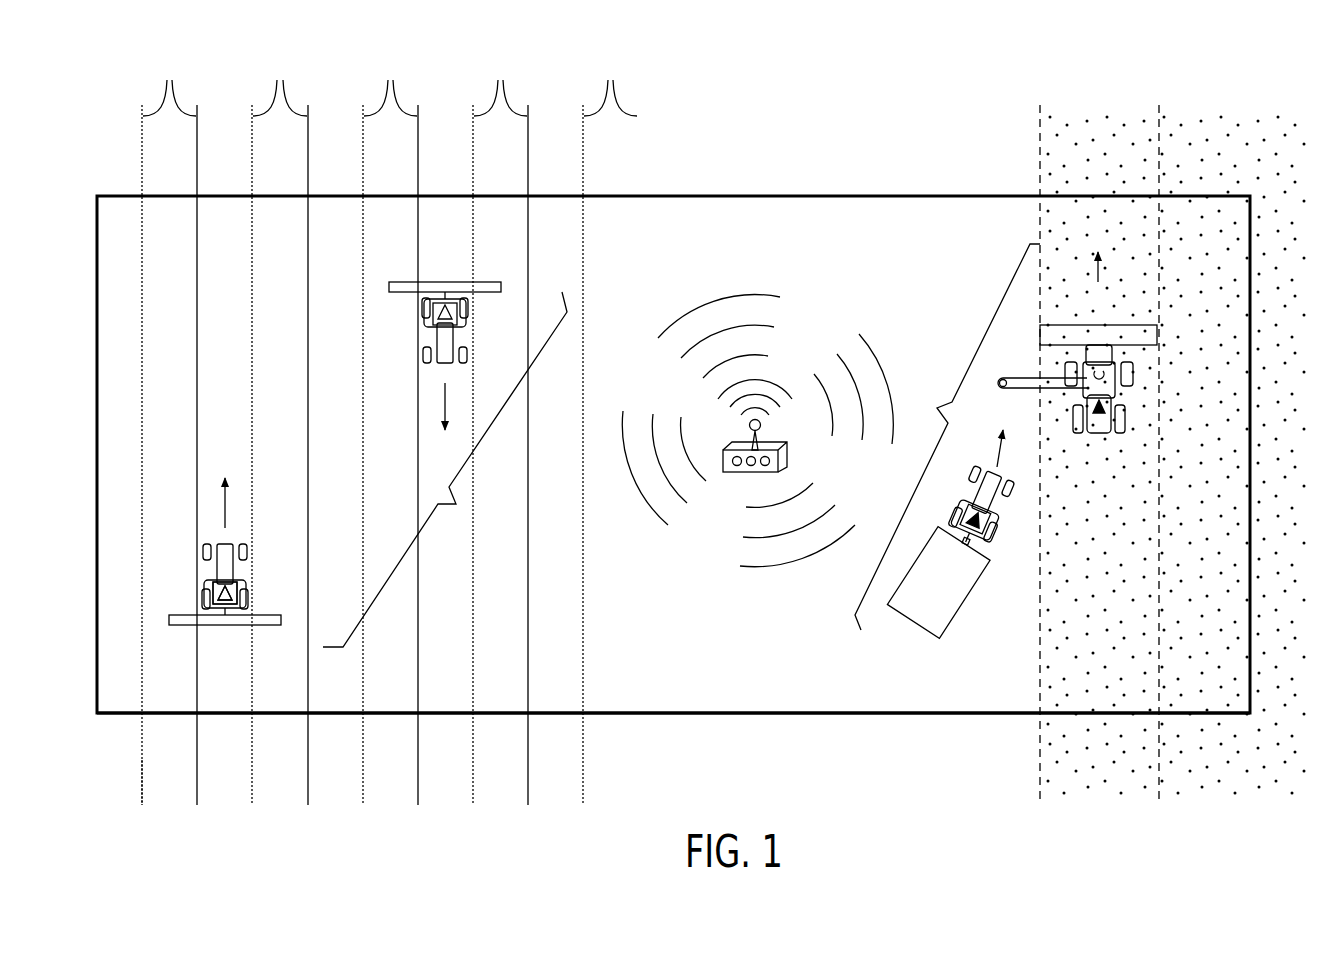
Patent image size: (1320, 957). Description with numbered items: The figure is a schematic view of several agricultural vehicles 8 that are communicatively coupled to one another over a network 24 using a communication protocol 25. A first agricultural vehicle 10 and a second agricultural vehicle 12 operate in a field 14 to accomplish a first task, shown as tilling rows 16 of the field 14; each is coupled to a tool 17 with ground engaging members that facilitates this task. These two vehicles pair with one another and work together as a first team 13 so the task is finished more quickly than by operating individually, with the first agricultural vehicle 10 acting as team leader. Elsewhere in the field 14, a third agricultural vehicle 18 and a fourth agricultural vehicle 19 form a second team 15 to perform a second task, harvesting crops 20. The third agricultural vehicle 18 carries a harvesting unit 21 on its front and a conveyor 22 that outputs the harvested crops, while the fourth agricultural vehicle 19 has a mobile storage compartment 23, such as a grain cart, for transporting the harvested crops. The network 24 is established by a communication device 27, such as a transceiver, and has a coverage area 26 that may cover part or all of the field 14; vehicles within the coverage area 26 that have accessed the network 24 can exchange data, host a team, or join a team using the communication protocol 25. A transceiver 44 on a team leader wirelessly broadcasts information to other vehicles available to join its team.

The agricultural vehicles 8 is at (193, 568).
The first agricultural vehicle 10 is at (246, 595).
The second agricultural vehicle 12 is at (467, 313).
The first team 13 is at (447, 506).
The field 14 is at (99, 159).
The second team 15 is at (950, 404).
The rows 16 is at (389, 429).
The tool 17 is at (236, 626).
The third agricultural vehicle 18 is at (1082, 398).
The fourth agricultural vehicle 19 is at (998, 474).
The crops 20 is at (1140, 168).
The harvesting unit 21 is at (1098, 298).
The conveyor 22 is at (1032, 380).
The mobile storage compartment 23 is at (915, 622).
The network 24 is at (130, 752).
The communication protocol 25 is at (712, 302).
The coverage area 26 is at (115, 716).
The communication device 27 is at (748, 474).
The transceiver 44 is at (216, 592).